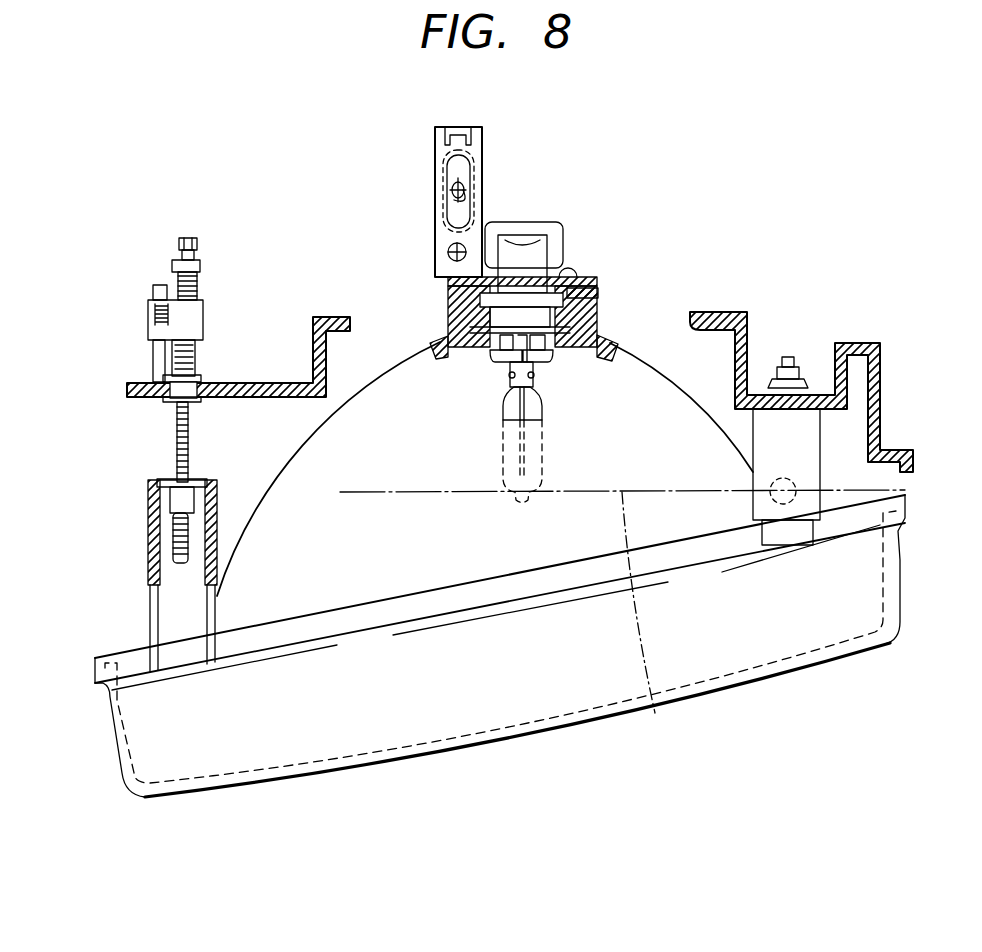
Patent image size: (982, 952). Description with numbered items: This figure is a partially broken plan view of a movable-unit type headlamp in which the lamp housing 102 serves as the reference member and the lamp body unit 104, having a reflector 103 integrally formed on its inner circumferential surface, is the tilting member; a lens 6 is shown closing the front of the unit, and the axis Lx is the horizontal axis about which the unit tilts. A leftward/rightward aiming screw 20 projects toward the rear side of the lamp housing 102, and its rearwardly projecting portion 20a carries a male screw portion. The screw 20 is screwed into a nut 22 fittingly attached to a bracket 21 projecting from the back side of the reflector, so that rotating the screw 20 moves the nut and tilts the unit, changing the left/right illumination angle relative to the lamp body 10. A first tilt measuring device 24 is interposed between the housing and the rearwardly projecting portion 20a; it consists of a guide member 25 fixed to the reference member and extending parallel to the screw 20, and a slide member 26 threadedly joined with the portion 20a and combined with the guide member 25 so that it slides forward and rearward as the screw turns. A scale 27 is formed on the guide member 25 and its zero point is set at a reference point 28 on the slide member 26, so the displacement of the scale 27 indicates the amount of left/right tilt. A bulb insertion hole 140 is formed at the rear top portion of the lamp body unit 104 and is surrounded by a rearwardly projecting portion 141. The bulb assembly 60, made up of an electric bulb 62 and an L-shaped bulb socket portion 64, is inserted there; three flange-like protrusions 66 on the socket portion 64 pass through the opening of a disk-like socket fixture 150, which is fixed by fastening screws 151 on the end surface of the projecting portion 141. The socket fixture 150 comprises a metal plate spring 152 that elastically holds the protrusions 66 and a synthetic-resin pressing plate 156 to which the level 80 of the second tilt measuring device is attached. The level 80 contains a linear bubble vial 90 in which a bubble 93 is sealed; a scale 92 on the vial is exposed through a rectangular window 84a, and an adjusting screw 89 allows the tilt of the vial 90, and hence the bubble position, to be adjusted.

The reflector lens body 6 is at (480, 747).
The lamp body 10 is at (797, 486).
The leftward/rightward aiming screw 20 is at (175, 437).
The rearwardly projecting portion 20a is at (174, 363).
The bracket 21 is at (148, 573).
The nut 22 is at (170, 508).
The first tilt measuring device 24 is at (152, 302).
The guide member 25 is at (158, 285).
The slide member 26 is at (205, 320).
The scale 27 is at (157, 313).
The reference point 28 is at (155, 325).
The bulb assembly 60 is at (548, 387).
The electric bulb 62 is at (542, 444).
The bulb socket portion 64 is at (534, 257).
The flange-like protrusions 66 is at (483, 287).
The level 80 is at (456, 181).
The rectangular window 84a is at (463, 167).
The adjusting screw 89 is at (447, 250).
The bubble vial 90 is at (480, 173).
The scale 92 is at (455, 203).
The bubble 93 is at (451, 190).
The lamp housing 102 is at (328, 316).
The reflector 103 is at (556, 360).
The lamp body unit 104 is at (445, 347).
The bulb insertion hole 140 is at (488, 320).
The rearwardly projecting portion 141 is at (602, 299).
The socket fixture 150 is at (567, 234).
The fastening screws 151 is at (580, 290).
The plate spring 152 is at (600, 300).
The pressing plate 156 is at (586, 283).